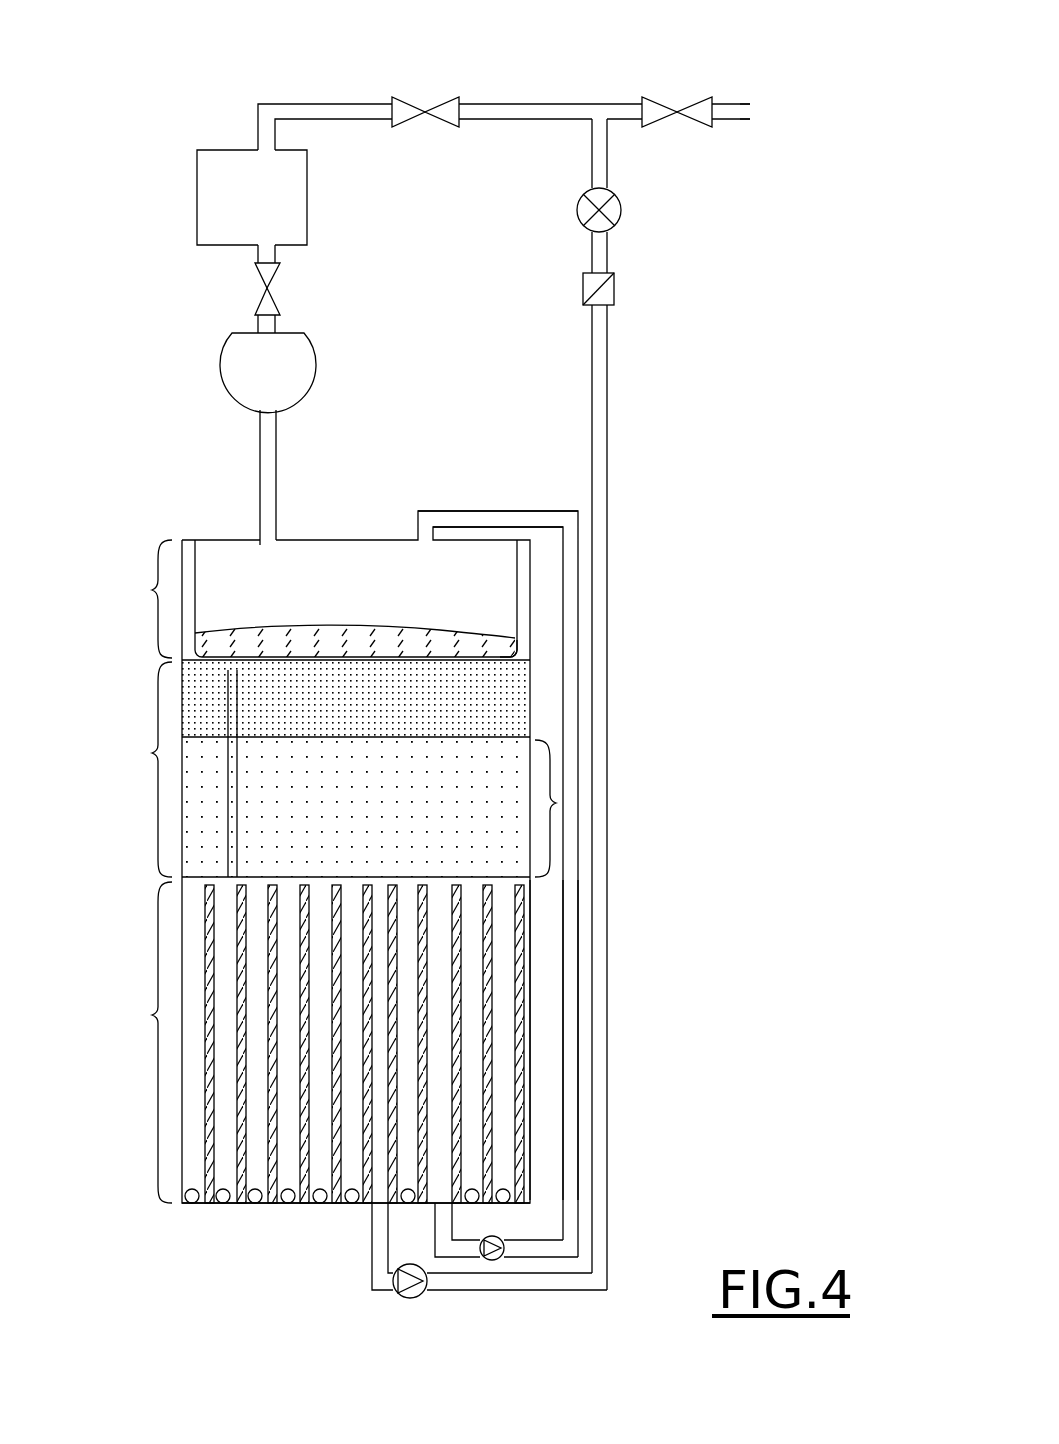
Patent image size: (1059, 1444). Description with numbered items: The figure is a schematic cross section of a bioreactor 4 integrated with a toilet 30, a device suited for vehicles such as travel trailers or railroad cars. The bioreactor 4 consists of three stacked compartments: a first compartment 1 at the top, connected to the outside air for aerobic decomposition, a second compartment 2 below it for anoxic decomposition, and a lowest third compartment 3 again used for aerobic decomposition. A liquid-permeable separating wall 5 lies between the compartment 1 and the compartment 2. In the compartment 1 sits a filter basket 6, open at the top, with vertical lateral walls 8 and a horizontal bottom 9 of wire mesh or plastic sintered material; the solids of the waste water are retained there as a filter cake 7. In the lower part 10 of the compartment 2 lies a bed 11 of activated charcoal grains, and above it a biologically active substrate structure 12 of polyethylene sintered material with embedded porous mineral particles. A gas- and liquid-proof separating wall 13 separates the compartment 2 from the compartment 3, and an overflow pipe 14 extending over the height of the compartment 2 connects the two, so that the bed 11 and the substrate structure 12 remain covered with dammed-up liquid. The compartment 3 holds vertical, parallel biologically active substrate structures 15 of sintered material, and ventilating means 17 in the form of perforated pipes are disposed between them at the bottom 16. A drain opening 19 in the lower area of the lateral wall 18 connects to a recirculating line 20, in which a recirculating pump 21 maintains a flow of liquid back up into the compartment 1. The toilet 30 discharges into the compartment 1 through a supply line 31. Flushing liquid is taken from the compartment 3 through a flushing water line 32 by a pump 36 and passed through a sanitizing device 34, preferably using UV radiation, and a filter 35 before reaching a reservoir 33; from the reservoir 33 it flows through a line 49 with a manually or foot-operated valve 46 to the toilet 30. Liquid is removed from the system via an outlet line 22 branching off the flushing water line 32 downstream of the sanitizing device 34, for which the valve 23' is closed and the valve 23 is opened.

The first compartment 1 is at (132, 590).
The second compartment 2 is at (132, 755).
The third compartment 3 is at (130, 1015).
The bioreactor 4 is at (188, 1228).
The separating wall 5 is at (520, 655).
The filter basket 6 is at (525, 567).
The filter cake 7 is at (372, 640).
The lateral walls 8 is at (196, 567).
The bottom 9 is at (310, 652).
The lower part 10 is at (556, 803).
The bed of activated charcoal grains 11 is at (368, 823).
The biologically active substrate structure 12 is at (510, 680).
The separating wall 13 is at (433, 878).
The overflow pipe 14 is at (237, 762).
The biologically active substrate structures 15 is at (240, 1205).
The bottom 16 is at (297, 1205).
The ventilating means 17 is at (346, 1205).
The lateral wall 18 is at (533, 1040).
The drain opening 19 is at (445, 1207).
The recirculating line 20 is at (570, 1102).
The recirculating pump 21 is at (493, 1262).
The outlet line 22 is at (737, 104).
The valve 23 is at (658, 74).
The valve 23' is at (415, 66).
The toilet 30 is at (245, 360).
The supply line 31 is at (268, 425).
The flushing water line 32 is at (300, 104).
The reservoir 33 is at (215, 197).
The sanitizing device 34 is at (612, 210).
The filter 35 is at (607, 292).
The pump 36 is at (416, 1296).
The valve 46 is at (256, 275).
The line 49 is at (258, 327).